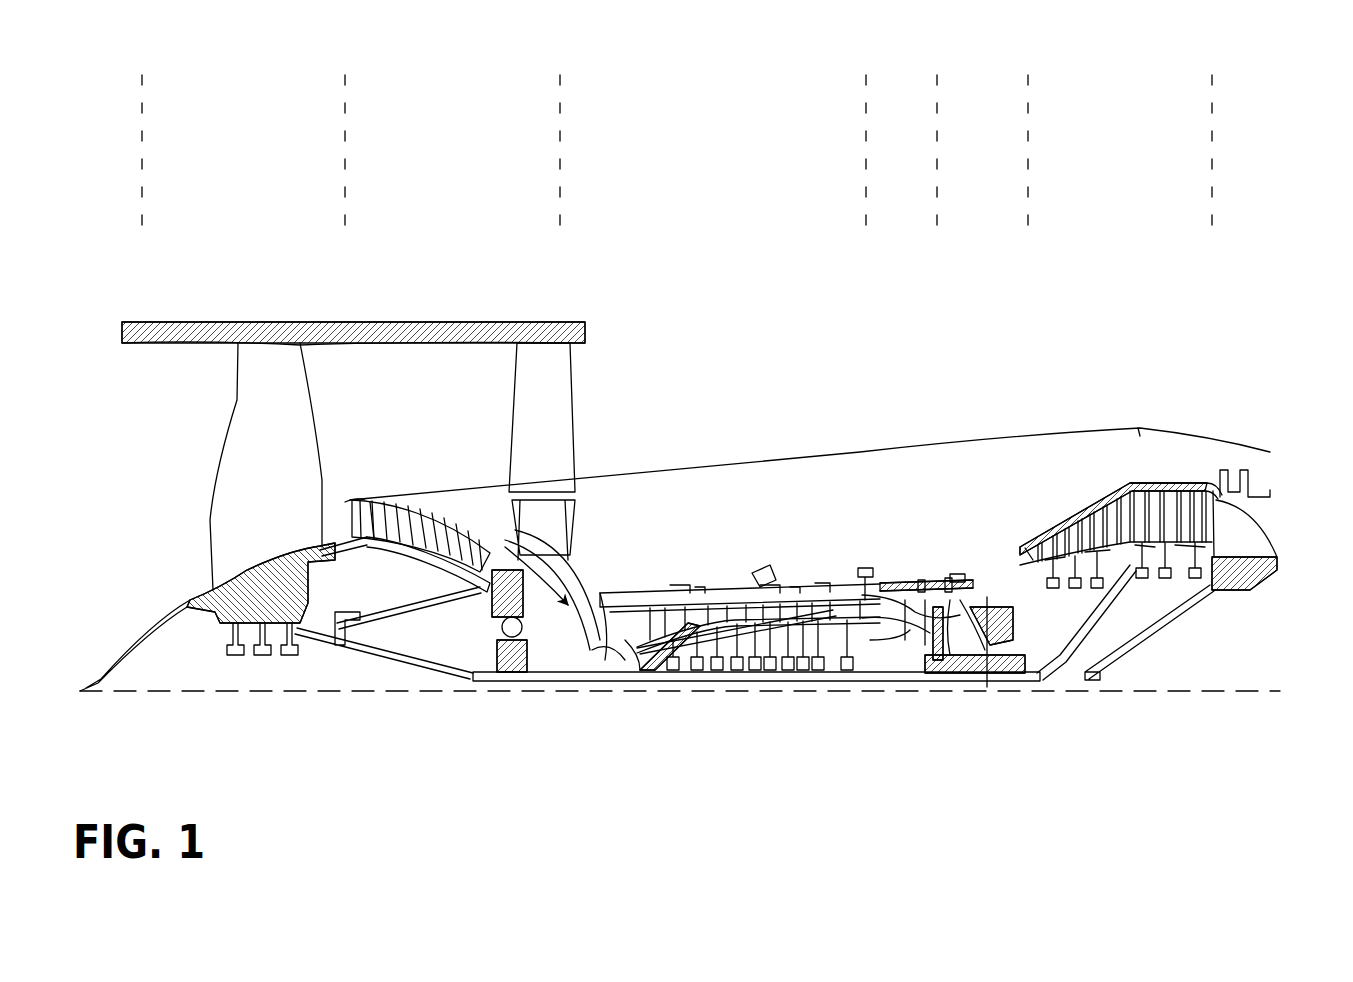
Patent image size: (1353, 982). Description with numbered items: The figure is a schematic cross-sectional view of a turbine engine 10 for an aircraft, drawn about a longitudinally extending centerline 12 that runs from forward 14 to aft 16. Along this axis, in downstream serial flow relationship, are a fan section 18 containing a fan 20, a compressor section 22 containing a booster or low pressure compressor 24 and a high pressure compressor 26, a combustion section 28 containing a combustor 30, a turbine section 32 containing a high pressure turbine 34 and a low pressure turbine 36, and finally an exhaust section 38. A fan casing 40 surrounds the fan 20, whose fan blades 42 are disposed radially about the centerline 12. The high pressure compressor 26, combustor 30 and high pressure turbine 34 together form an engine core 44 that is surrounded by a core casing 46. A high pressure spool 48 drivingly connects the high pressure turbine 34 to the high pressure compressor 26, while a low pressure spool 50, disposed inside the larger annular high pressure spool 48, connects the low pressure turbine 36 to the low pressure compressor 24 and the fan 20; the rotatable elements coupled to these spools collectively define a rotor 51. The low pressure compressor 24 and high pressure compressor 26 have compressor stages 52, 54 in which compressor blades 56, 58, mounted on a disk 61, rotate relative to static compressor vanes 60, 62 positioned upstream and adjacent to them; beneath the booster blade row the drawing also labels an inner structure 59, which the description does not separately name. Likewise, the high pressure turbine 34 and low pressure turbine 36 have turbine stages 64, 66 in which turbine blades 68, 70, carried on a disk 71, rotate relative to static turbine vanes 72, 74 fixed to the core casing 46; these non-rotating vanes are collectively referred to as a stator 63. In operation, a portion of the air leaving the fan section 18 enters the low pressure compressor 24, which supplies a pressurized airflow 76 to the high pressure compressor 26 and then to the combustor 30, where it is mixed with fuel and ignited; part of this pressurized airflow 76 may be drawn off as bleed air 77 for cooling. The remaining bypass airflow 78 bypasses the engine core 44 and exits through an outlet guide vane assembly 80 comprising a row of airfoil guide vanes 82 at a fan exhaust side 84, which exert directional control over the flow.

The turbine engine 10 is at (888, 316).
The engine centerline 12 is at (242, 695).
The forward 14 is at (88, 454).
The aft 16 is at (1300, 541).
The fan section 18 is at (142, 153).
The fan 20 is at (178, 532).
The compressor section 22 is at (865, 66).
The low pressure compressor 24 is at (560, 153).
The high pressure compressor 26 is at (560, 153).
The combustion section 28 is at (866, 153).
The combustor 30 is at (920, 580).
The turbine section 32 is at (1212, 66).
The high pressure turbine 34 is at (1028, 153).
The low pressure turbine 36 is at (1028, 153).
The exhaust section 38 is at (1290, 498).
The fan casing 40 is at (262, 334).
The fan blades 42 is at (298, 402).
The engine core 44 is at (842, 495).
The core casing 46 is at (1163, 480).
The high pressure spool 48 is at (880, 650).
The low pressure spool 50 is at (490, 688).
The rotor 51 is at (440, 575).
The compressor stages of the LP compressor 52 is at (406, 445).
The compressor stages of the HP compressor 54 is at (620, 505).
The compressor blades of the LP compressor 56 is at (375, 502).
The compressor blades of the HP compressor 58 is at (640, 630).
The inner casing 59 is at (378, 548).
The static compressor vanes of the LP compressor 60 is at (360, 500).
The disk 61 is at (636, 660).
The static compressor vanes of the HP compressor 62 is at (612, 600).
The stator 63 is at (612, 655).
The turbine stages of the HP turbine 64 is at (1000, 525).
The turbine stages of the LP turbine 66 is at (1035, 440).
The turbine blades of the HP turbine 68 is at (955, 576).
The turbine blades of the LP turbine 70 is at (1050, 530).
The disk 71 is at (957, 673).
The static turbine vanes of the HP turbine 72 is at (948, 578).
The static turbine vanes of the LP turbine 74 is at (1035, 540).
The pressurized airflow 76 is at (560, 560).
The bleed air 77 is at (712, 585).
The bypass airflow 78 is at (640, 392).
The outlet guide vane assembly 80 is at (590, 446).
The airfoil guide vanes 82 is at (522, 432).
The fan exhaust side 84 is at (620, 348).